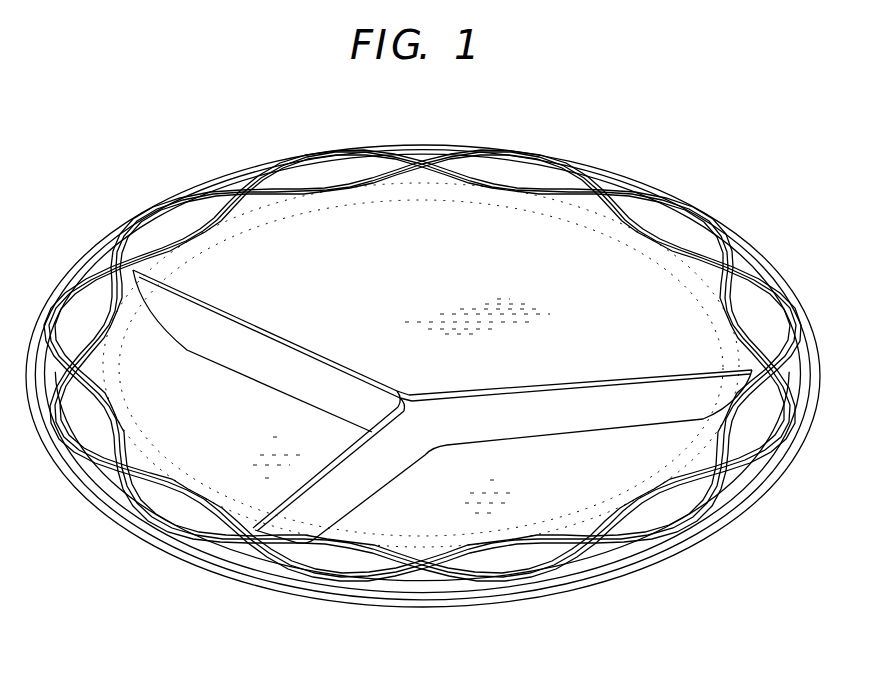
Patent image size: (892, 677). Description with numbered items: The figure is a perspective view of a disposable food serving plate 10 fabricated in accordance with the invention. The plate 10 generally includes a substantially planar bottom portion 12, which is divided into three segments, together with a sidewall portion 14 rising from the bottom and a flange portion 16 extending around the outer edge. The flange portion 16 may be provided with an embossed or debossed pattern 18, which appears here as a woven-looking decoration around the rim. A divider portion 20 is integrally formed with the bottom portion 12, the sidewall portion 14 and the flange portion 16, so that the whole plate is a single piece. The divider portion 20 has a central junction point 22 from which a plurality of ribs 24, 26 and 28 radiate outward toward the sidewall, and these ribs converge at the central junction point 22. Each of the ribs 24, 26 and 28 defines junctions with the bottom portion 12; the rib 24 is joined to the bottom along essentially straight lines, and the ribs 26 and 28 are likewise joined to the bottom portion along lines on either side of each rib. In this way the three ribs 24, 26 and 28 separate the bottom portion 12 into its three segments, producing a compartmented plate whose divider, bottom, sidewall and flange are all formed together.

The plate 10 is at (178, 156).
The bottom portion 12 is at (414, 304).
The sidewall portion 14 is at (566, 236).
The flange portion 16 is at (655, 192).
The embossed or debossed pattern 18 is at (780, 280).
The divider portion 20 is at (462, 387).
The central junction point 22 is at (408, 401).
The rib 24 is at (300, 348).
The rib 26 is at (282, 503).
The rib 28 is at (578, 385).